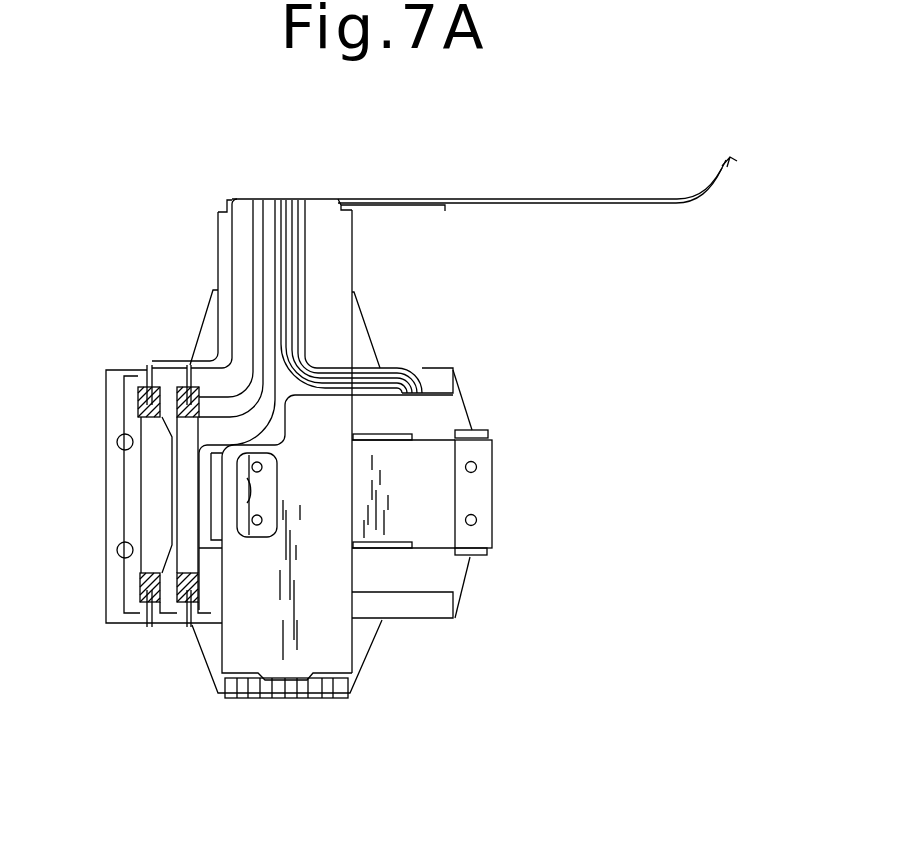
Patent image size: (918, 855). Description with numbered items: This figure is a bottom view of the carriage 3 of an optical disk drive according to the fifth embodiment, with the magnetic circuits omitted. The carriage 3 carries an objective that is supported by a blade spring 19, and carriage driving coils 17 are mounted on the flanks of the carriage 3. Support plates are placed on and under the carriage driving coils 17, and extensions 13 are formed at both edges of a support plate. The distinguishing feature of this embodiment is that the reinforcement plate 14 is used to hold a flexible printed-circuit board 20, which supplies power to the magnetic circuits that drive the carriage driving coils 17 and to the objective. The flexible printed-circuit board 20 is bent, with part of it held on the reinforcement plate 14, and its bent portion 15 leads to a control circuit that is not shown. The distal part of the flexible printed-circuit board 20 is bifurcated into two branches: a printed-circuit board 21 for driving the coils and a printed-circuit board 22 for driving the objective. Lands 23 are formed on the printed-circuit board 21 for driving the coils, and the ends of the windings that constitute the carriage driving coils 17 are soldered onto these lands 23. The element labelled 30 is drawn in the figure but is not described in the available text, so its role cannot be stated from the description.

The carriage 3 is at (156, 300).
The extensions 13 is at (363, 337).
The reinforcement plate 14 is at (253, 642).
The bent portion 15 is at (423, 205).
The carriage driving coils 17 is at (290, 698).
The blade spring 19 is at (410, 518).
The flexible printed-circuit board 20 is at (560, 200).
The printed-circuit board for driving the coils 21 is at (172, 499).
The printed-circuit board for driving the objective 22 is at (413, 363).
The lands 23 is at (197, 404).
The connector block 30 is at (447, 418).